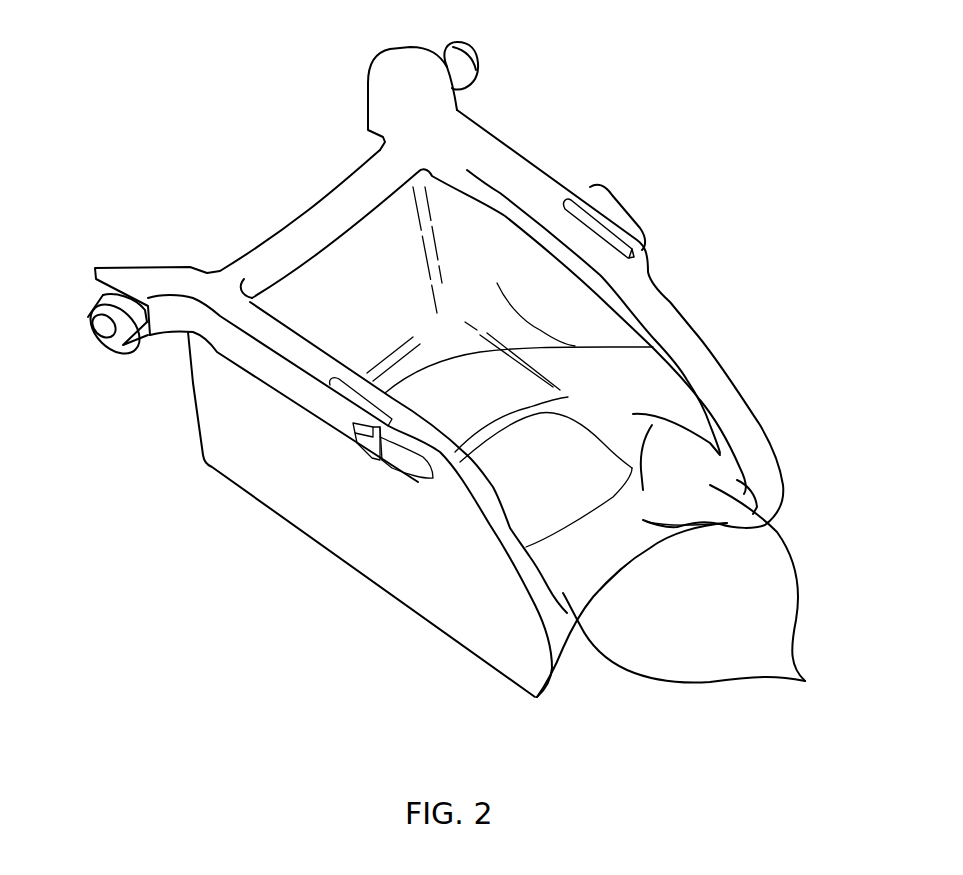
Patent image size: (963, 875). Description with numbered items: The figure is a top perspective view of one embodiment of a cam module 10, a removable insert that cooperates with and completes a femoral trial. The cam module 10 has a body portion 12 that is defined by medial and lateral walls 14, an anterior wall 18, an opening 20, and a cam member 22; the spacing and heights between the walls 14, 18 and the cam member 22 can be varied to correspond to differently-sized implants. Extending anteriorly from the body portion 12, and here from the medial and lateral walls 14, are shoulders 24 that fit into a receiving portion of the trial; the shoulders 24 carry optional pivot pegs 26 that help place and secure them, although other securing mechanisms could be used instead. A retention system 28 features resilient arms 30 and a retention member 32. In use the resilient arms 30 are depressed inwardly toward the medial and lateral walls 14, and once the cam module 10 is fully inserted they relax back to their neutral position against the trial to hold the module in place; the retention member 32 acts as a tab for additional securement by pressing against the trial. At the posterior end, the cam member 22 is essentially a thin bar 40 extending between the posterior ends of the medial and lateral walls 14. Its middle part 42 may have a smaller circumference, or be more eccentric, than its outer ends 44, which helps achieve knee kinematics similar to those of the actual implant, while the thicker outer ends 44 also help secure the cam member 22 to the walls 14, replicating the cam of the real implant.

The cam module 10 is at (737, 162).
The body portion 12 is at (163, 495).
The medial and lateral walls 14 is at (653, 347).
The anterior wall 18 is at (362, 267).
The opening 20 is at (556, 492).
The cam member 22 is at (677, 450).
The shoulders 24 is at (380, 52).
The pivot pegs 26 is at (468, 62).
The retention system 28 is at (633, 197).
The resilient arms 30 is at (617, 202).
The retention member 32 is at (357, 437).
The thin bar 40 is at (678, 528).
The middle part 42 is at (628, 540).
The outer ends 44 is at (800, 678).